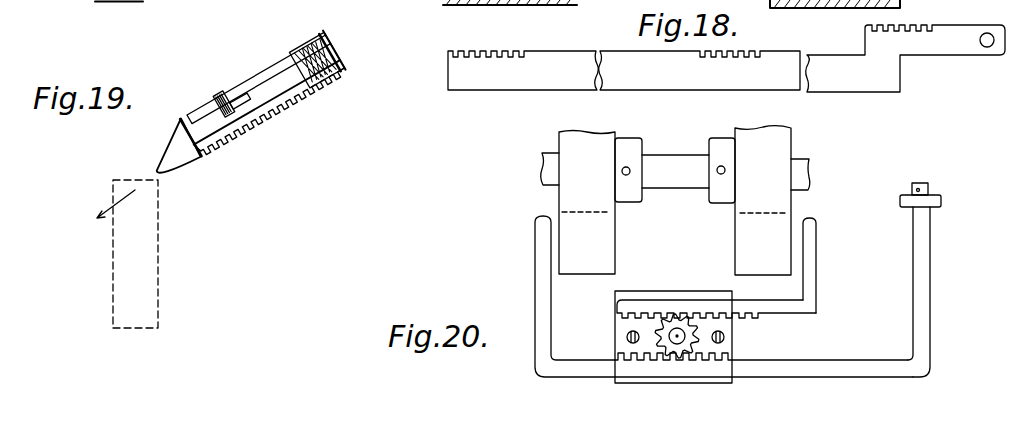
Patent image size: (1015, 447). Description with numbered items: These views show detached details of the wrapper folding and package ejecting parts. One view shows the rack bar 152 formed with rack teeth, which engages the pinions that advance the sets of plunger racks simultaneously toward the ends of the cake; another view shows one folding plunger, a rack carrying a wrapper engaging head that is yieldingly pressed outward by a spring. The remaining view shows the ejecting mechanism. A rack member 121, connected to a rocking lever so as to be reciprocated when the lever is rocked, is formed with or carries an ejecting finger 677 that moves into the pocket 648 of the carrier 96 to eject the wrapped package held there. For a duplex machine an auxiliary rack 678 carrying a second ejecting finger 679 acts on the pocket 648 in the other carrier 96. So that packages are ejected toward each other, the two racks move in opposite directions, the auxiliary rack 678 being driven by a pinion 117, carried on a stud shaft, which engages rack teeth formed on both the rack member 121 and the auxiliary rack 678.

In FIG. 18, the toothed rack bar 152 is at (585, 43).
In FIG. 20, the carrier 96 is at (559, 207).
In FIG. 20, the pocket 648 is at (612, 247).
In FIG. 20, the ejecting finger 677 is at (540, 252).
In FIG. 20, the ejecting finger 679 is at (818, 237).
In FIG. 20, the pinion 117 is at (675, 311).
In FIG. 20, the auxiliary rack 678 is at (805, 312).
In FIG. 20, the rack member 121 is at (855, 362).